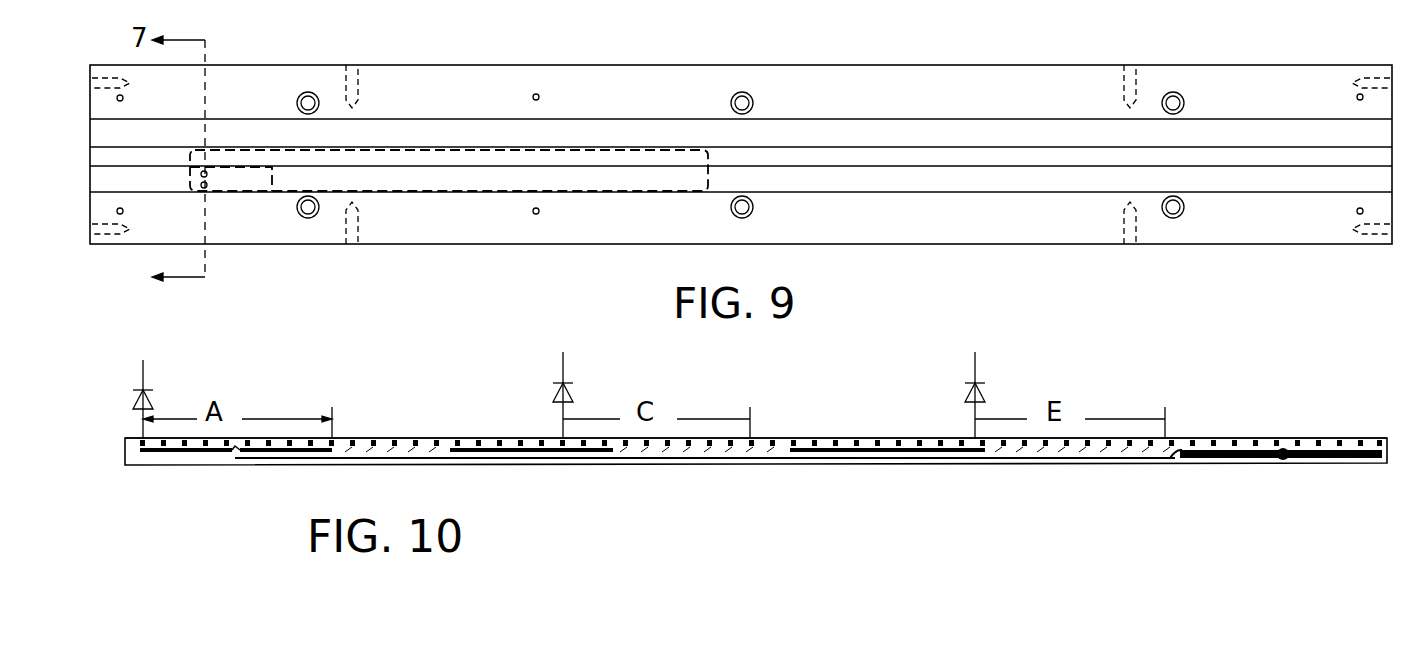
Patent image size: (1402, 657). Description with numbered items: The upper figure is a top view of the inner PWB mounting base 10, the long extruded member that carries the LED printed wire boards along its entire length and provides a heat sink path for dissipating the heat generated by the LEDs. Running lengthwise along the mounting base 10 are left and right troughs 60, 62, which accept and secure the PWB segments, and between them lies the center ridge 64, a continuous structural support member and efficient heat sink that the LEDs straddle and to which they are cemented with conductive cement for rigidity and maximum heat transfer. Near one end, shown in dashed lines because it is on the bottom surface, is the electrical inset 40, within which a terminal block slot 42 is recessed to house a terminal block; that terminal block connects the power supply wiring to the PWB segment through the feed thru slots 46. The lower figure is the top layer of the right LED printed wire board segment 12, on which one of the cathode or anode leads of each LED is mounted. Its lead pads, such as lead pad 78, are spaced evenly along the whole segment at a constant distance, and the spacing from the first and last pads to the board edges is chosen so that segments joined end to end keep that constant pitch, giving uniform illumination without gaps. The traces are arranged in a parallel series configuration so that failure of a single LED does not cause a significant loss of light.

In FIG. 9, the inner PWB mounting base 10 is at (1083, 244).
In FIG. 10, the right LED printed wire board segment 12 is at (938, 463).
In FIG. 9, the electrical inset 40 is at (427, 192).
In FIG. 9, the terminal block slot 42 is at (267, 177).
In FIG. 9, the feed thru slots 46 is at (206, 188).
In FIG. 9, the left trough 60 is at (878, 127).
In FIG. 9, the right trough 62 is at (895, 183).
In FIG. 9, the center ridge 64 is at (770, 153).
In FIG. 10, the lead pad 78 is at (767, 440).